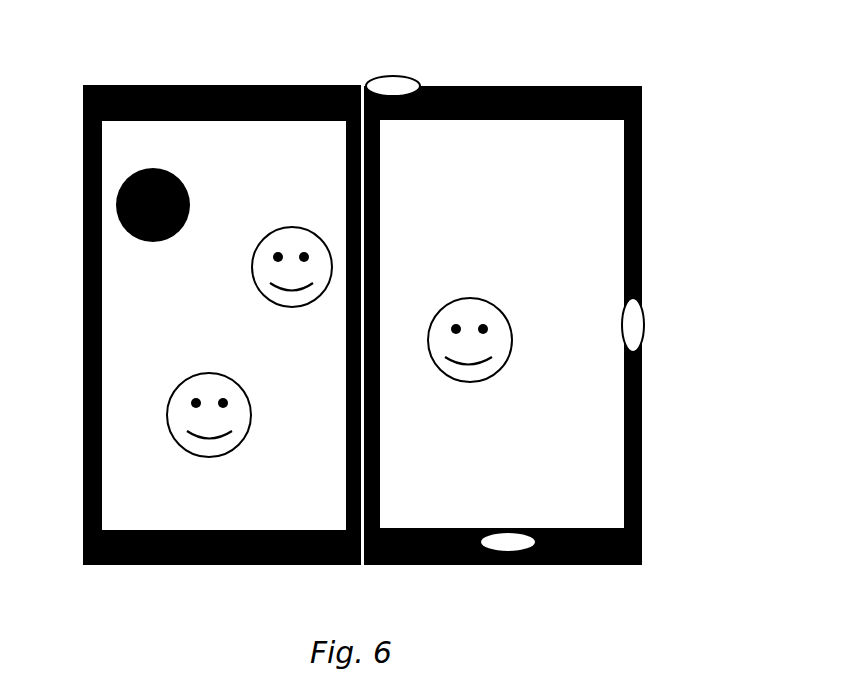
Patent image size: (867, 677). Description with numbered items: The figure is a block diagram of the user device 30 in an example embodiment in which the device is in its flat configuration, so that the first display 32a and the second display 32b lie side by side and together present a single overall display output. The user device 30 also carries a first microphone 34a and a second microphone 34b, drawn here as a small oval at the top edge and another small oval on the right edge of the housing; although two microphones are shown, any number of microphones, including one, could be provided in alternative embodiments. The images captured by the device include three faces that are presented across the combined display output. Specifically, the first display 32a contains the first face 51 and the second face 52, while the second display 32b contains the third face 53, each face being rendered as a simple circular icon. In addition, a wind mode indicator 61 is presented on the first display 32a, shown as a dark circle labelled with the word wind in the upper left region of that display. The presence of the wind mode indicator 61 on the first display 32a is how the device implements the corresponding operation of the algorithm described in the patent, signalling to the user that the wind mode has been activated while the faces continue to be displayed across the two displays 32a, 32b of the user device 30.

The user device 30 is at (603, 565).
The first display 32a is at (125, 493).
The second display 32b is at (595, 454).
The first microphone 34a is at (418, 82).
The second microphone 34b is at (645, 322).
The first face 51 is at (247, 425).
The second face 52 is at (252, 282).
The third face 53 is at (463, 378).
The wind mode indicator 61 is at (185, 185).